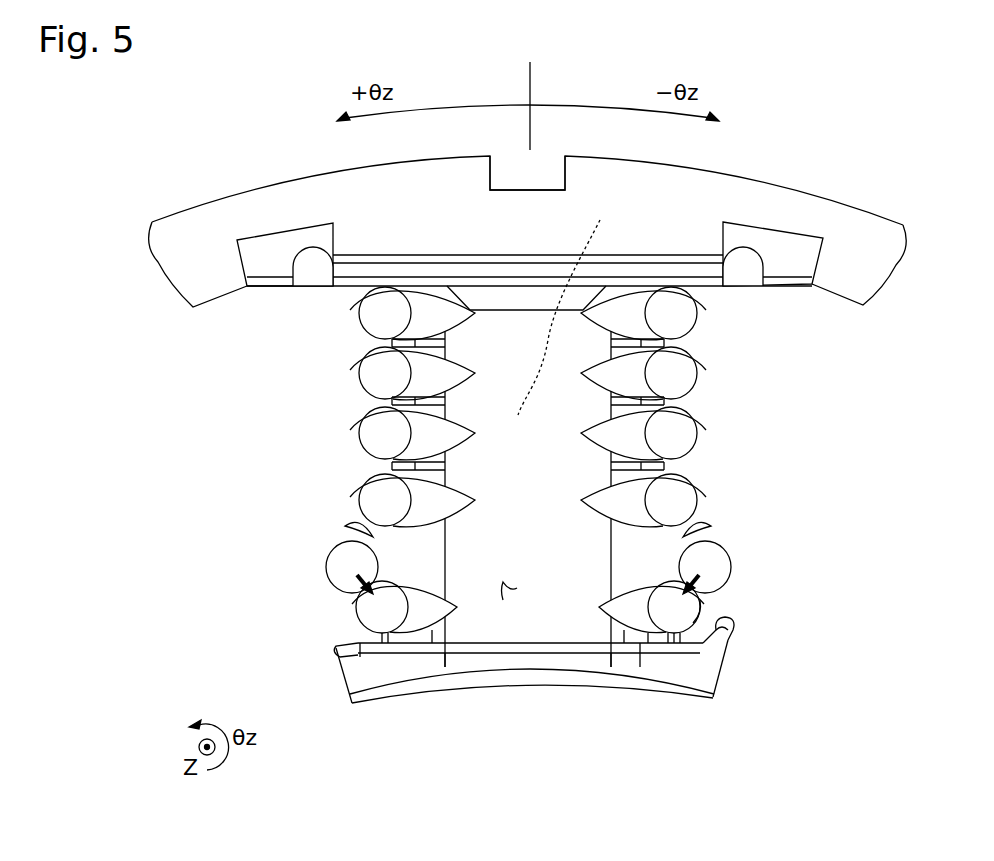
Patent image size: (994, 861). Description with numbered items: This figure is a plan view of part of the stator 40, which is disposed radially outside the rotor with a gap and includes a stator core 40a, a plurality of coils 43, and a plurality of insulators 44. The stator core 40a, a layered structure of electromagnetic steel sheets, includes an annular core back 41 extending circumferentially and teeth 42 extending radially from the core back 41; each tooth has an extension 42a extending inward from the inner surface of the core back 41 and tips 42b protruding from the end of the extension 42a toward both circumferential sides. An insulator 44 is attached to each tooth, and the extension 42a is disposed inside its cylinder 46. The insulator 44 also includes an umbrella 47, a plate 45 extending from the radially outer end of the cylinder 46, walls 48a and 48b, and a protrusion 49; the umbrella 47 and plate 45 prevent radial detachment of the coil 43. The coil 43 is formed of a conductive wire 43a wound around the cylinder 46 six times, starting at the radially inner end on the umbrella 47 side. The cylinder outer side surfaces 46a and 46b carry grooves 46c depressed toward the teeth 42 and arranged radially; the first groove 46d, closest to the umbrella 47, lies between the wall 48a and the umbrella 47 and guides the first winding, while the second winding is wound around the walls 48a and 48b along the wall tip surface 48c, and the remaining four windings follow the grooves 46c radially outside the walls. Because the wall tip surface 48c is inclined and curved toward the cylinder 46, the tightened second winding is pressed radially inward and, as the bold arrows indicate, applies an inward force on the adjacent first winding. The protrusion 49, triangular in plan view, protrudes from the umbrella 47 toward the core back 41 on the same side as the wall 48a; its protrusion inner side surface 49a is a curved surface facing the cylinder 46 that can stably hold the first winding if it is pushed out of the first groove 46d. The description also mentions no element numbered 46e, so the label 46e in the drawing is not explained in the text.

The stator 40 is at (855, 196).
The stator core 40a is at (245, 183).
The core back 41 is at (380, 202).
The teeth 42 is at (606, 200).
The extension 42a is at (567, 307).
The tip 42b is at (418, 692).
The coil 43 is at (700, 633).
The conductive wire 43a is at (703, 603).
The insulator 44 is at (775, 218).
The plate 45 is at (680, 255).
The cylinder 46 is at (553, 597).
The cylinder outer side surface 46a is at (627, 468).
The cylinder outer side surface 46b is at (395, 462).
The groove 46c is at (362, 300).
The first groove 46d is at (365, 622).
The center portion 46e is at (503, 600).
The umbrella 47 is at (699, 683).
The wall 48a is at (708, 524).
The wall 48b is at (347, 525).
The wall tip surface 48c is at (728, 580).
The protrusion 49 is at (733, 640).
The protrusion inner side surface 49a is at (740, 627).